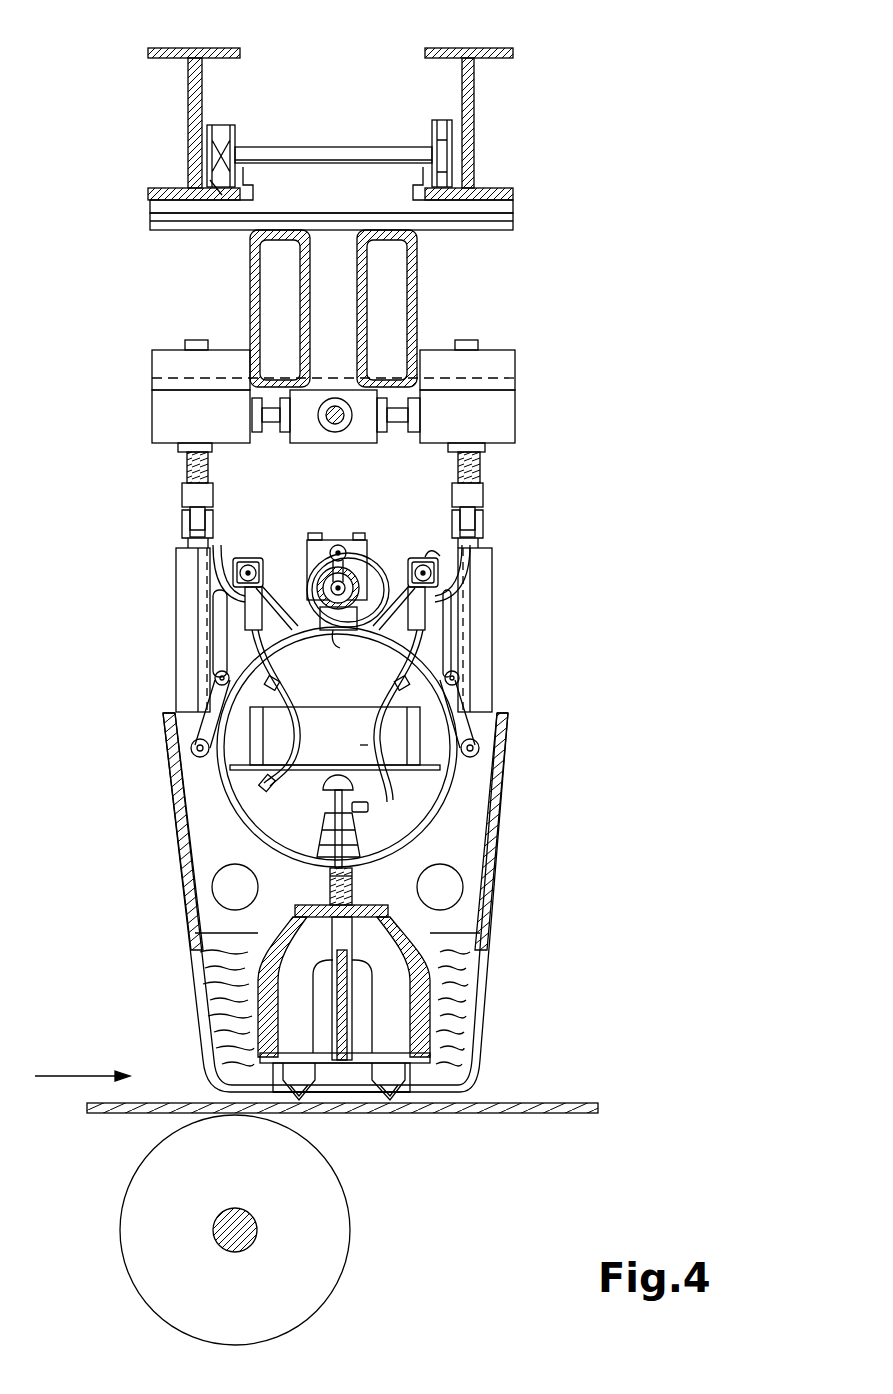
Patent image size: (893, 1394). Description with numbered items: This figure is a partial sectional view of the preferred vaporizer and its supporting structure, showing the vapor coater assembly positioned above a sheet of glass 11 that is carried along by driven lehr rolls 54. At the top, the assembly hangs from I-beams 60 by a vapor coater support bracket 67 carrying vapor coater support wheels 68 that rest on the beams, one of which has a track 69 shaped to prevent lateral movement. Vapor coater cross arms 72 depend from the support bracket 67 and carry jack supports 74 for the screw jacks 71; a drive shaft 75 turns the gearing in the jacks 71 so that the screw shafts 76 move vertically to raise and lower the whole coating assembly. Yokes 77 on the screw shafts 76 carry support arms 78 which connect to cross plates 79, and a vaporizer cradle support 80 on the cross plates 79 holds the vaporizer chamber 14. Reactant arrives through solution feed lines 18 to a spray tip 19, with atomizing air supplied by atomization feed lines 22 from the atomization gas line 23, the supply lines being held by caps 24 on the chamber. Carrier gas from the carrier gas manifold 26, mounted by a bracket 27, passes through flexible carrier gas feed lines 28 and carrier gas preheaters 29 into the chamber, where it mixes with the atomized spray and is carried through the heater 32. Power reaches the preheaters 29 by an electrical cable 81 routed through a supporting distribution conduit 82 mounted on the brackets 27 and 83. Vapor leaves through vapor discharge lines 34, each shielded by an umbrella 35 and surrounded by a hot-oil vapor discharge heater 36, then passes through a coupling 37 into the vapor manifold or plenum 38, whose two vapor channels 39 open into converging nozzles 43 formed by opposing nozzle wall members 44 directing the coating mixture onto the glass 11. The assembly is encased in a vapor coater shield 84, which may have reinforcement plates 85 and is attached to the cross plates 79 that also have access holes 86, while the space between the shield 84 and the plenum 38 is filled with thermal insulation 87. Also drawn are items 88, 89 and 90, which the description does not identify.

The sheet of glass 11 is at (547, 1114).
The vaporizer chamber 14 is at (404, 700).
The solution feed lines 18 is at (307, 580).
The spray tip 19 is at (342, 645).
The atomization feed lines 22 is at (385, 578).
The atomization gas line 23 is at (342, 548).
The caps 24 is at (362, 545).
The carrier gas manifold 26 is at (458, 675).
The bracket 27 is at (447, 640).
The carrier gas feed lines 28 is at (215, 545).
The carrier gas preheater 29 is at (176, 684).
The heater 32 is at (322, 735).
The vapor discharge lines 34 is at (335, 805).
The umbrella 35 is at (323, 790).
The vapor discharge heater 36 is at (320, 835).
The coupling 37 is at (352, 886).
The vapor manifold or plenum 38 is at (395, 918).
The vapor channels 39 is at (344, 988).
The nozzles 43 is at (345, 1070).
The nozzle wall members 44 is at (453, 1096).
The lehr rolls 54 is at (350, 1195).
The I-beams 60 is at (220, 56).
The vapor coater support bracket 67 is at (322, 197).
The vapor coater support wheels 68 is at (232, 125).
The track 69 is at (215, 190).
The screw jacks 71 is at (152, 418).
The vapor coater cross arms 72 is at (250, 285).
The jack supports 74 is at (152, 366).
The drive shaft 75 is at (343, 425).
The screw shafts 76 is at (187, 474).
The yokes 77 is at (182, 498).
The support arms 78 is at (182, 528).
The cross plates 79 is at (465, 840).
The vaporizer cradle support 80 is at (330, 882).
The electrical cable 81 is at (425, 557).
The supporting distribution conduit 82 is at (250, 558).
The bracket 83 is at (275, 640).
The vapor coater shield 84 is at (482, 950).
The reinforcement plates 85 is at (190, 858).
The access holes 86 is at (463, 887).
The thermal insulation 87 is at (475, 985).
The hose 88 is at (290, 695).
The clamp 89 is at (386, 805).
The heater 90 is at (362, 752).